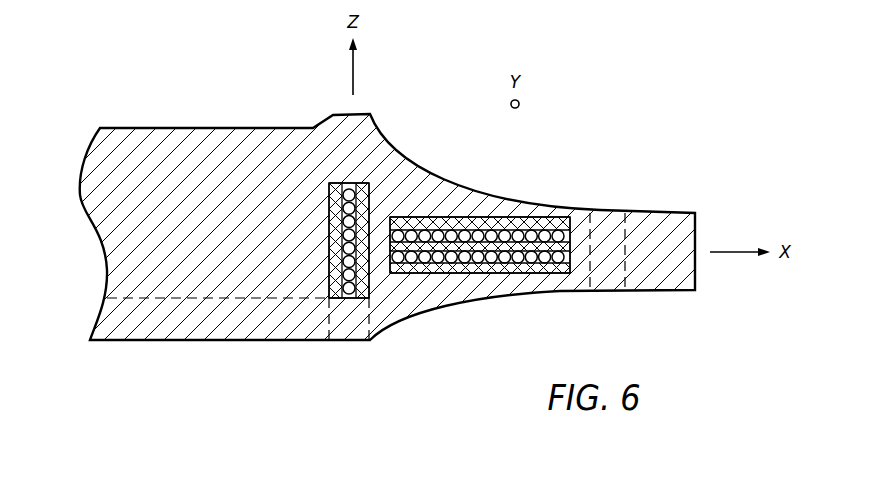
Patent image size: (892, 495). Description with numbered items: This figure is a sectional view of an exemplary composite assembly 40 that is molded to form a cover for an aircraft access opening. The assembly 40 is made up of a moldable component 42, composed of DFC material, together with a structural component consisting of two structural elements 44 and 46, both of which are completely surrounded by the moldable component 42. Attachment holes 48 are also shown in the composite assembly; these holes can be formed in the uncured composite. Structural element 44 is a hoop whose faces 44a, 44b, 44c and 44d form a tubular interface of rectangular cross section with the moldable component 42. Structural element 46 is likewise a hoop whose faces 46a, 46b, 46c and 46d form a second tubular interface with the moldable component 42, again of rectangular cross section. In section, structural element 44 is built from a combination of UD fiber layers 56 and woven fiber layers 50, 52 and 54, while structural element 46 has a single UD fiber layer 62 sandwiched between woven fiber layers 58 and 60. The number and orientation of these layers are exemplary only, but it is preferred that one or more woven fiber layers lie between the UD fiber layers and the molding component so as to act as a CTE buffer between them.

The composite assembly 40 is at (604, 156).
The moldable component 42 is at (175, 148).
The structural element 44 is at (517, 234).
The face 44a is at (470, 217).
The face 44b is at (570, 267).
The face 44c is at (451, 273).
The face 44d is at (391, 233).
The structural element 46 is at (317, 234).
The face 46a is at (349, 183).
The face 46b is at (370, 188).
The face 46c is at (337, 300).
The face 46d is at (329, 255).
The attachment holes 48 is at (617, 216).
The woven fiber layer 50 is at (548, 228).
The woven fiber layer 52 is at (545, 266).
The woven fiber layer 54 is at (568, 245).
The UD fiber layers 56 is at (392, 260).
The woven fiber layer 58 is at (340, 183).
The woven fiber layer 60 is at (364, 183).
The UD fiber layer 62 is at (350, 290).